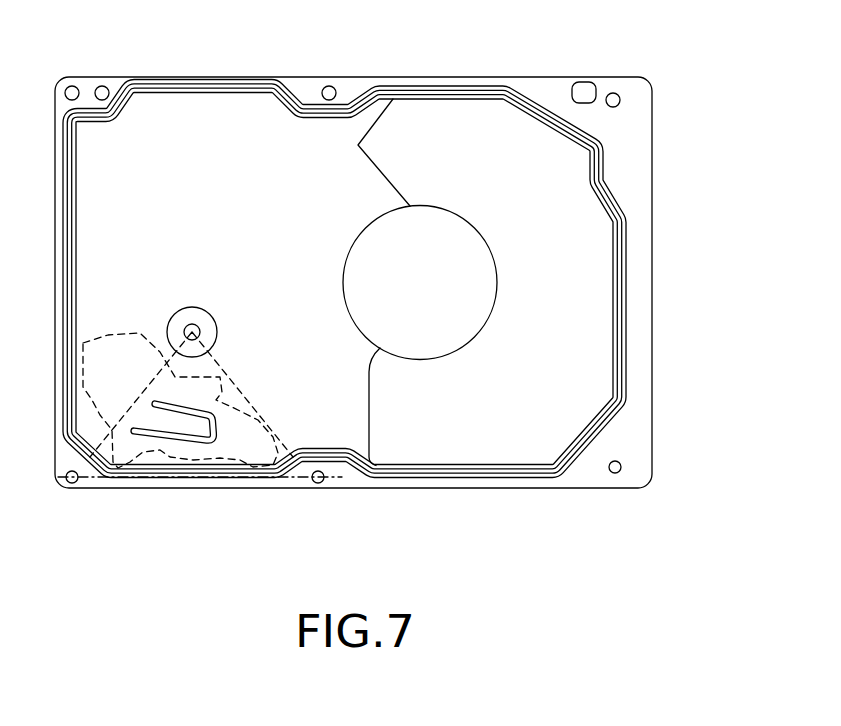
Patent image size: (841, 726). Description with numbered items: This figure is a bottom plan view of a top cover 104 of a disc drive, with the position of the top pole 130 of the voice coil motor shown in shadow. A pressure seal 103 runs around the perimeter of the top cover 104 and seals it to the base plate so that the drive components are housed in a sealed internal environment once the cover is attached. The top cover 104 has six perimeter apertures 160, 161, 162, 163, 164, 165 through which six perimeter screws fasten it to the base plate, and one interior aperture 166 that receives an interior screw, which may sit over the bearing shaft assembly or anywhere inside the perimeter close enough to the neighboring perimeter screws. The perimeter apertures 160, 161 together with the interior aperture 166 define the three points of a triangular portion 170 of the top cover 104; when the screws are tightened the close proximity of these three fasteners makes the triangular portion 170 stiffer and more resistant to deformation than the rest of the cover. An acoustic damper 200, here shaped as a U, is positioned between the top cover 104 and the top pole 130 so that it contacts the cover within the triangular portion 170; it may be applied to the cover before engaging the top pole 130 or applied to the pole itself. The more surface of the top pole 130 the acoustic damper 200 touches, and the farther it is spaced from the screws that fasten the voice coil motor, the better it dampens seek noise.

The pressure seal 103 is at (627, 260).
The top cover 104 is at (587, 470).
The top pole 130 is at (118, 343).
The perimeter aperture 160 is at (74, 479).
The perimeter aperture 161 is at (320, 479).
The perimeter aperture 162 is at (621, 467).
The perimeter aperture 163 is at (615, 99).
The perimeter aperture 164 is at (331, 92).
The perimeter aperture 165 is at (74, 91).
The interior aperture 166 is at (193, 330).
The triangular portion 170 is at (225, 370).
The acoustic damper 200 is at (217, 423).